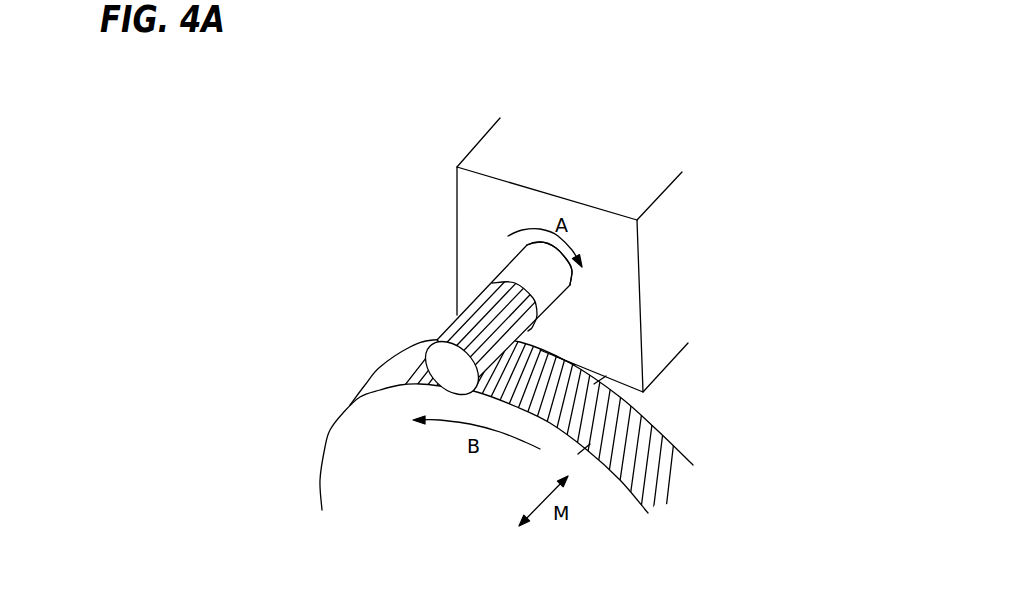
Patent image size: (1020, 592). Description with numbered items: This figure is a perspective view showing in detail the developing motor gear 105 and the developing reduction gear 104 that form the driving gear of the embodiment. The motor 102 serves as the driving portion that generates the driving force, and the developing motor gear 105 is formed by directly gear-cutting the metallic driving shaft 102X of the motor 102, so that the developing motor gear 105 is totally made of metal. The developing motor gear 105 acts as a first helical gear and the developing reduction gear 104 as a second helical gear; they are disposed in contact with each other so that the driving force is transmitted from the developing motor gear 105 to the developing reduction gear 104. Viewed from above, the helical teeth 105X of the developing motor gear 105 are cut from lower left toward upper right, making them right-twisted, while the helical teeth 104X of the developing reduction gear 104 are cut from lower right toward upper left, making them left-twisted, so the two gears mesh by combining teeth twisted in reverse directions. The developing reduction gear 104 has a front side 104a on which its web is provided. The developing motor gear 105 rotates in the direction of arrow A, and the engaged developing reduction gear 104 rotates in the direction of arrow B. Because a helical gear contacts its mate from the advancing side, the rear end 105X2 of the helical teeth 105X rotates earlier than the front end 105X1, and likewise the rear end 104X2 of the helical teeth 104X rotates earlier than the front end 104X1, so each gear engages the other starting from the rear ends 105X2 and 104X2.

The motor 102 is at (560, 249).
The metallic driving shaft 102X is at (553, 285).
The developing reduction gear 104 is at (513, 432).
The front side 104a is at (360, 443).
The helical teeth 104X is at (593, 418).
The front end 104X1 is at (583, 450).
The rear end 104X2 is at (600, 380).
The developing motor gear 105 is at (436, 272).
The helical teeth 105X is at (498, 280).
The front end 105X1 is at (437, 338).
The rear end 105X2 is at (522, 272).